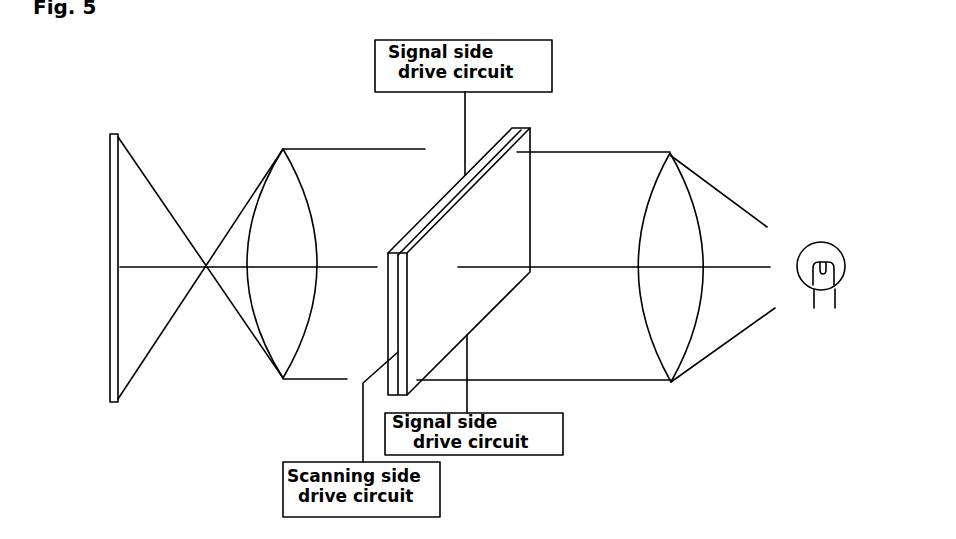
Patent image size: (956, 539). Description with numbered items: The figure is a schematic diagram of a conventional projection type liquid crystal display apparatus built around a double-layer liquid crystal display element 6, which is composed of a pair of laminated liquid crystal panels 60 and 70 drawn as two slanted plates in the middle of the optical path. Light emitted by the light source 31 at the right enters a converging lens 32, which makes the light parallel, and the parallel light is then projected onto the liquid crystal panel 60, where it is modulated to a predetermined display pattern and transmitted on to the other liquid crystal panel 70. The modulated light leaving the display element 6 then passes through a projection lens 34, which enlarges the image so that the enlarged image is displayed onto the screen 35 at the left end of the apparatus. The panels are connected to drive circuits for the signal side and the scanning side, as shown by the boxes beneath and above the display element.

The double-layer liquid crystal display element 6 is at (489, 235).
The light source 31 is at (813, 247).
The converging lens 32 is at (672, 164).
The projection lens 34 is at (275, 345).
The screen 35 is at (113, 133).
The liquid crystal panel 60 is at (527, 202).
The liquid crystal panel 70 is at (423, 218).